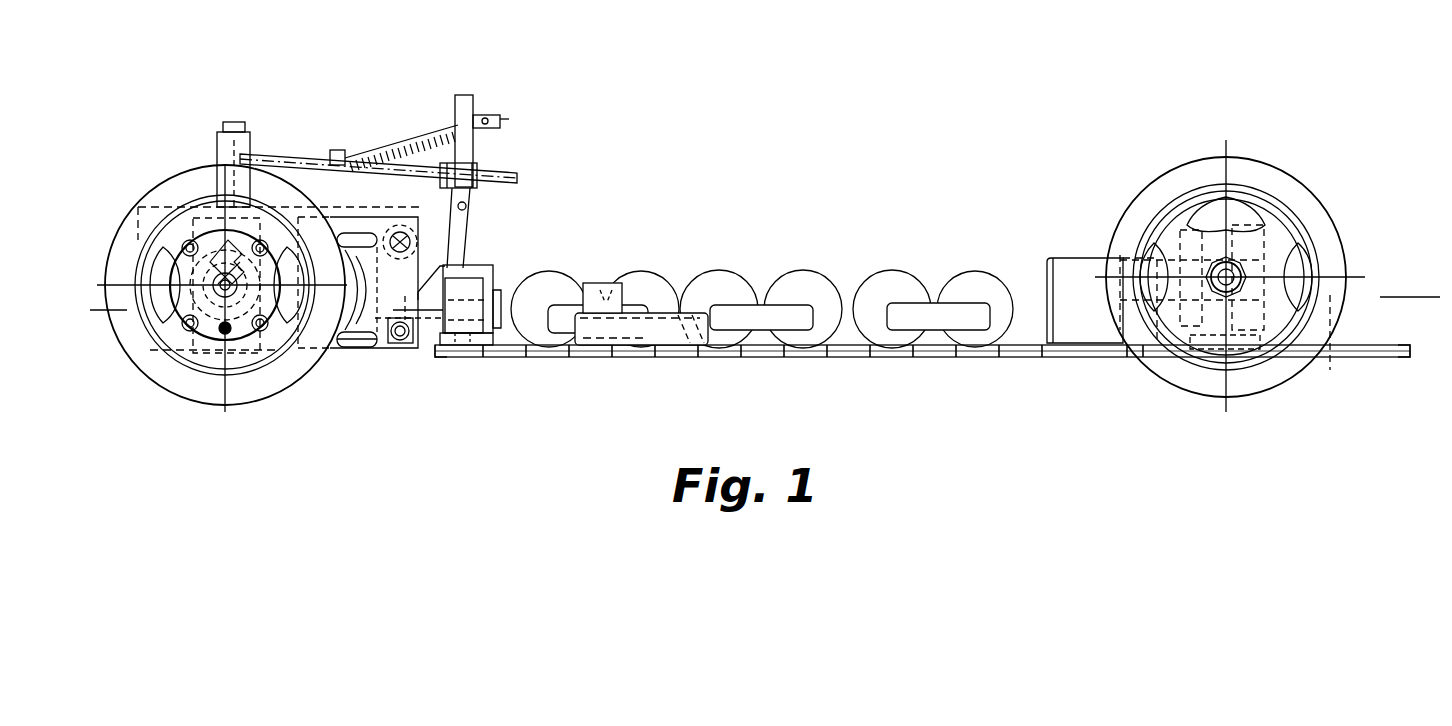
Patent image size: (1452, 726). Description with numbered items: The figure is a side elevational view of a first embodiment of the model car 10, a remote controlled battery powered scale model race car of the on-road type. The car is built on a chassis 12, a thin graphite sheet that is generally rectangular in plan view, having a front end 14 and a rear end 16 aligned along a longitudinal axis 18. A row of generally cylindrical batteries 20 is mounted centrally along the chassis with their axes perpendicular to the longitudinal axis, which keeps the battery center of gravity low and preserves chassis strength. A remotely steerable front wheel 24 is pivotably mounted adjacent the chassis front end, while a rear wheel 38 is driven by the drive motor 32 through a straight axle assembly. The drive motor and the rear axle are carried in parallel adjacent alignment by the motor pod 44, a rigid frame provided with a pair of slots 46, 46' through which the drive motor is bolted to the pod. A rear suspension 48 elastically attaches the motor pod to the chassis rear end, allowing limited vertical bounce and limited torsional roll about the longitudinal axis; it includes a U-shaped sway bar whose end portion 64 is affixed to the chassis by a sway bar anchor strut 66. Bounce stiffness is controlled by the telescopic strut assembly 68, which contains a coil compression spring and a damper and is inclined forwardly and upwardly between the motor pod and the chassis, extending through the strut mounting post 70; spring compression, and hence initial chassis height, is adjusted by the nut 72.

The model car 10 is at (765, 248).
The chassis 12 is at (922, 382).
The front end 14 is at (1407, 357).
The rear end 16 is at (439, 357).
The longitudinal axis 18 is at (507, 310).
The batteries 20 is at (575, 272).
The front wheel 24 is at (1322, 188).
The drive motor 32 is at (325, 225).
The rear wheel 38 is at (162, 186).
The motor pod 44 is at (383, 224).
The slot 46 is at (351, 224).
The slot 46' is at (336, 397).
The rear suspension 48 is at (487, 255).
The end portion 64 is at (518, 180).
The sway bar anchor strut 66 is at (473, 220).
The telescopic strut assembly 68 is at (414, 128).
The strut mounting post 70 is at (470, 97).
The nut 72 is at (500, 119).